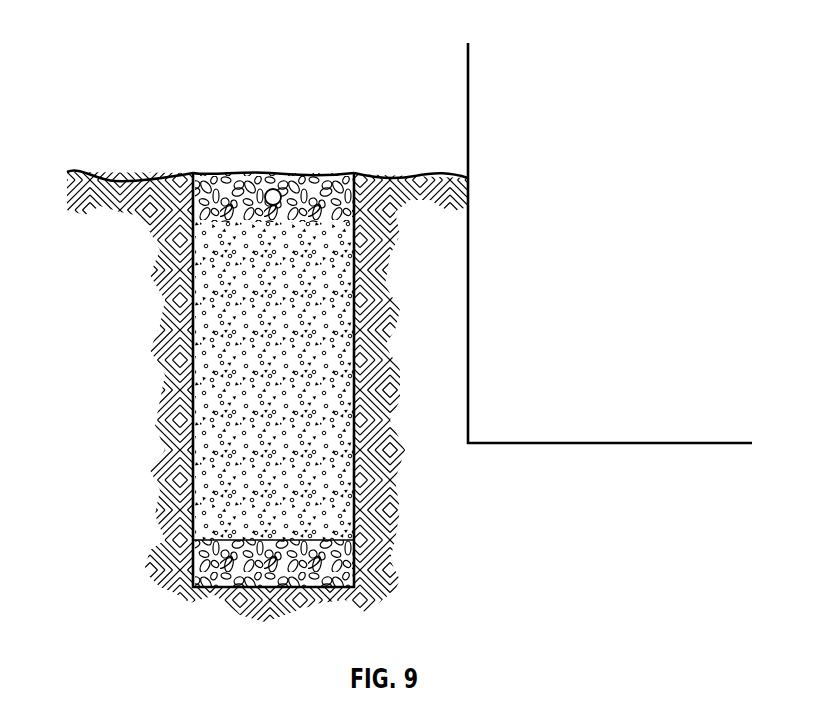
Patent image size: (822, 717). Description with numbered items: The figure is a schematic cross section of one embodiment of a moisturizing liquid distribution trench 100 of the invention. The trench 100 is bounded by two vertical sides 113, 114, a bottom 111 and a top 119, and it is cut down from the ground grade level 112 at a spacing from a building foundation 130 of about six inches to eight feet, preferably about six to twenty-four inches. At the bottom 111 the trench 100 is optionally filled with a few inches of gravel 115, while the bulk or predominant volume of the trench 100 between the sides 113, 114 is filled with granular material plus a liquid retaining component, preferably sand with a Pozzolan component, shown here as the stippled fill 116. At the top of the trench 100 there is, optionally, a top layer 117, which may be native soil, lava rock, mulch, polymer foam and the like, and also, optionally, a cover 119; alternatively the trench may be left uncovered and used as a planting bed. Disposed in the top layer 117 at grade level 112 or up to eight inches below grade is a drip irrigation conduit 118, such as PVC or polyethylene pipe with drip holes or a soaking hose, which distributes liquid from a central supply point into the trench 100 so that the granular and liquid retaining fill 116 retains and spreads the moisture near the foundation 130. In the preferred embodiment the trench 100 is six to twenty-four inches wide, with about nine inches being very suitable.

The trench 100 is at (111, 72).
The bottom 111 is at (228, 590).
The ground grade level 112 is at (140, 178).
The vertical side 113 is at (356, 404).
The vertical side 114 is at (189, 401).
The gravel 115 is at (357, 570).
The sand fill 116 is at (312, 338).
The top layer 117 is at (355, 204).
The drip irrigation conduit 118 is at (278, 186).
The cover 119 is at (232, 176).
The building foundation 130 is at (715, 443).